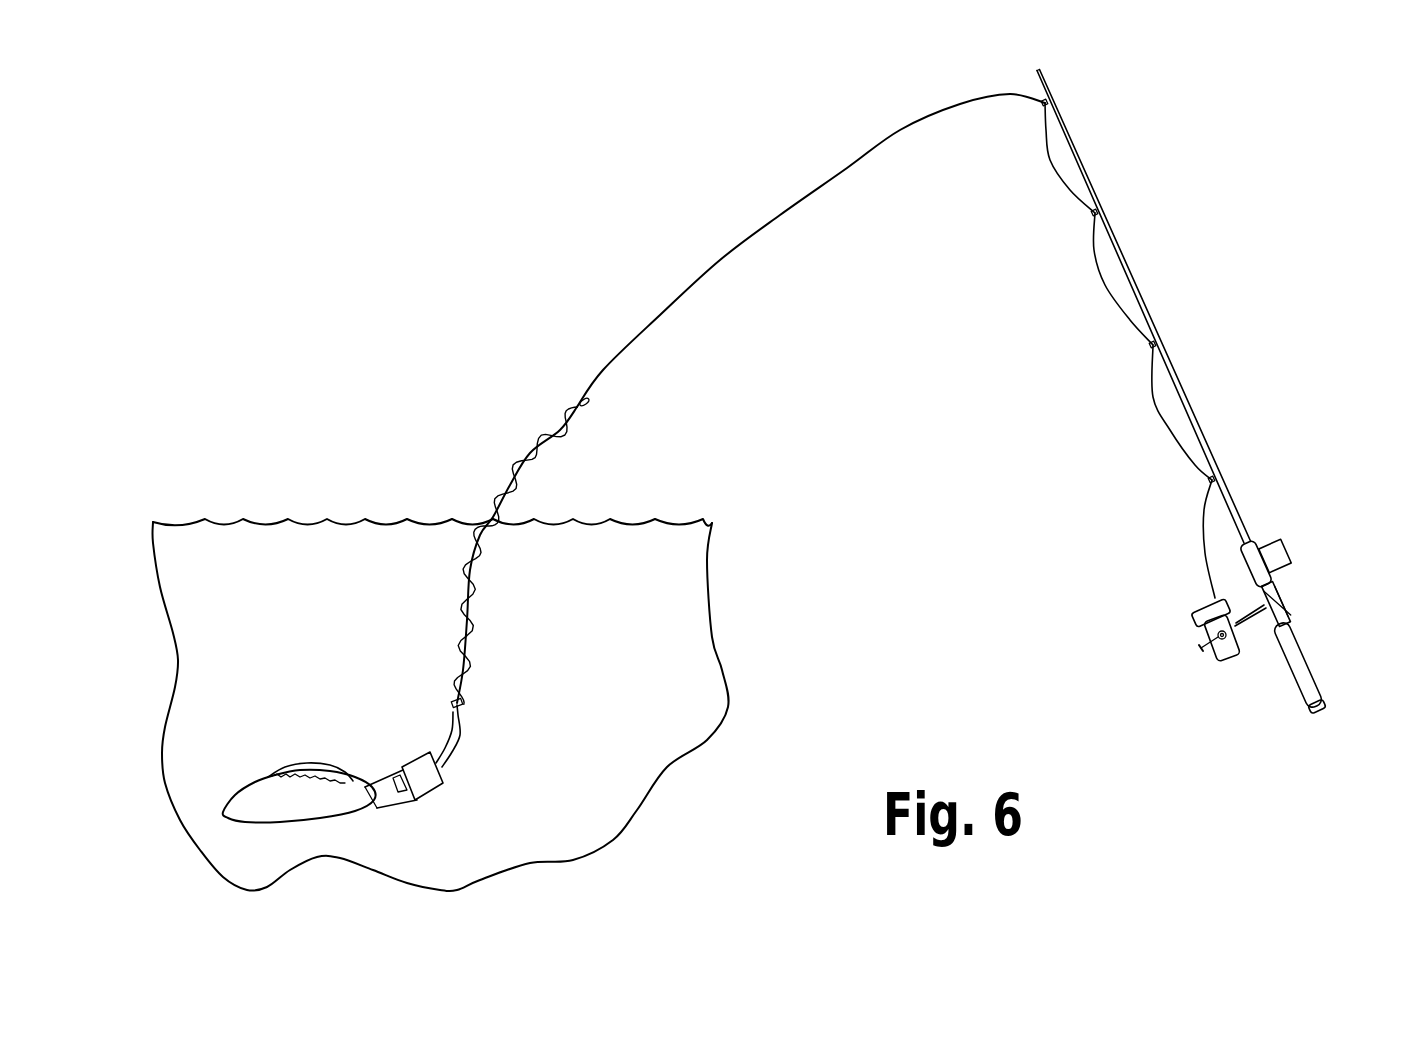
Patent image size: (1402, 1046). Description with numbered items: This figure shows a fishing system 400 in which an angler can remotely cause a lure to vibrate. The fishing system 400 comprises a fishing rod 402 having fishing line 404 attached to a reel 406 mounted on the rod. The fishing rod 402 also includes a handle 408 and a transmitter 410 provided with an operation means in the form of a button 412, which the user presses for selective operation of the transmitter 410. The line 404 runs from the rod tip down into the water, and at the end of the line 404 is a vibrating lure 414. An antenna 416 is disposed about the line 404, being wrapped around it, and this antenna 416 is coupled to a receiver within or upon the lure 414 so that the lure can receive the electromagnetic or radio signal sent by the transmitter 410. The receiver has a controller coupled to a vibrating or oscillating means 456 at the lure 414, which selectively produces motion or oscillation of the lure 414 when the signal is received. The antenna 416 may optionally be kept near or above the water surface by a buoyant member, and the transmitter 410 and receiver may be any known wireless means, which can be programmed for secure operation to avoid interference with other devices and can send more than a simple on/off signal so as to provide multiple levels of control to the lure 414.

The fishing system 400 is at (1200, 130).
The fishing rod 402 is at (1183, 389).
The fishing line 404 is at (843, 170).
The reel 406 is at (1213, 660).
The handle 408 is at (1306, 653).
The transmitter 410 is at (1280, 567).
The button 412 is at (1285, 552).
The vibrating lure 414 is at (284, 822).
The antenna 416 is at (542, 455).
The vibrating or oscillating means 456 is at (410, 757).